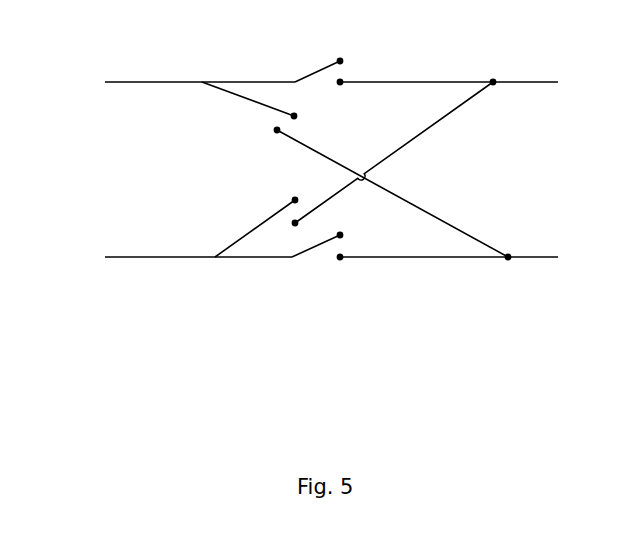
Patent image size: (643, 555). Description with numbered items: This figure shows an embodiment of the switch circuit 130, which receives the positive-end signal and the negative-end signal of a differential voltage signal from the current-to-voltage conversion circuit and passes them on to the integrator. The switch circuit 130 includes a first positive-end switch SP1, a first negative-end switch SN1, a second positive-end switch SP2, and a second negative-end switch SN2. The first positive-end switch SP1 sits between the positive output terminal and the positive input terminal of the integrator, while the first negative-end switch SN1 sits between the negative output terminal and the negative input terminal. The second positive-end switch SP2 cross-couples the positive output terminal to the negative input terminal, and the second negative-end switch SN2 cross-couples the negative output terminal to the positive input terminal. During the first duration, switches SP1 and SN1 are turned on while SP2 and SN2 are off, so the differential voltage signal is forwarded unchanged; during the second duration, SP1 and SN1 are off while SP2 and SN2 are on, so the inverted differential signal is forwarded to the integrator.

The switch circuit 130 is at (309, 197).
The first positive-end switch SP1 is at (319, 62).
The second positive-end switch SP2 is at (249, 107).
The first negative-end switch SN1 is at (317, 259).
The second negative-end switch SN2 is at (256, 216).